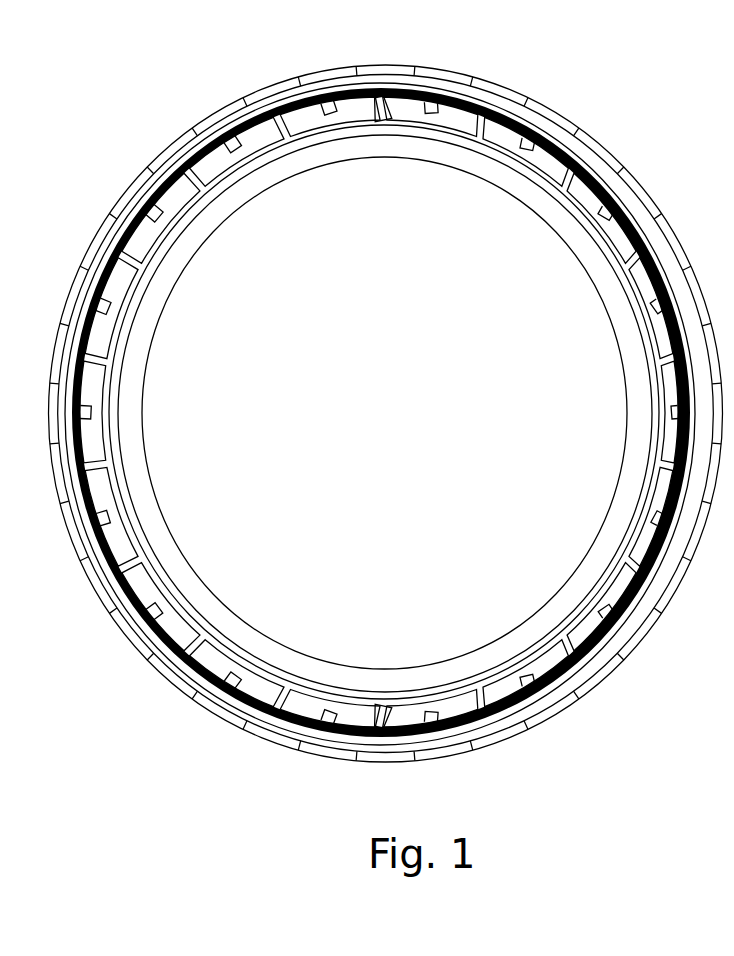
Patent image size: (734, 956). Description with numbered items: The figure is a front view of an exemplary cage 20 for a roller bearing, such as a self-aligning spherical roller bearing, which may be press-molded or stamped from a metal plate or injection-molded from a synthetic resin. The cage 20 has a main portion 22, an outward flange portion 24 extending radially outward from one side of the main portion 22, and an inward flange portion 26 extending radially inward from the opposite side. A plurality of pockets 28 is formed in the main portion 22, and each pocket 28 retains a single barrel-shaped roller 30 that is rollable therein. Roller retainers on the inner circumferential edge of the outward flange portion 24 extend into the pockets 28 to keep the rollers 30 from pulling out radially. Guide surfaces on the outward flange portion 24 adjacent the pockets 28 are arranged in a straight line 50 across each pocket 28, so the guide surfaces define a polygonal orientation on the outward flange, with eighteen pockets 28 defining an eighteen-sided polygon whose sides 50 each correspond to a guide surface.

The cage 20 is at (130, 197).
The main portion 22 is at (300, 132).
The outward flange portion 24 is at (170, 148).
The inward flange portion 26 is at (237, 207).
The pocket 28 is at (158, 228).
The barrel-shaped roller 30 is at (108, 310).
The straight line 50 is at (549, 134).